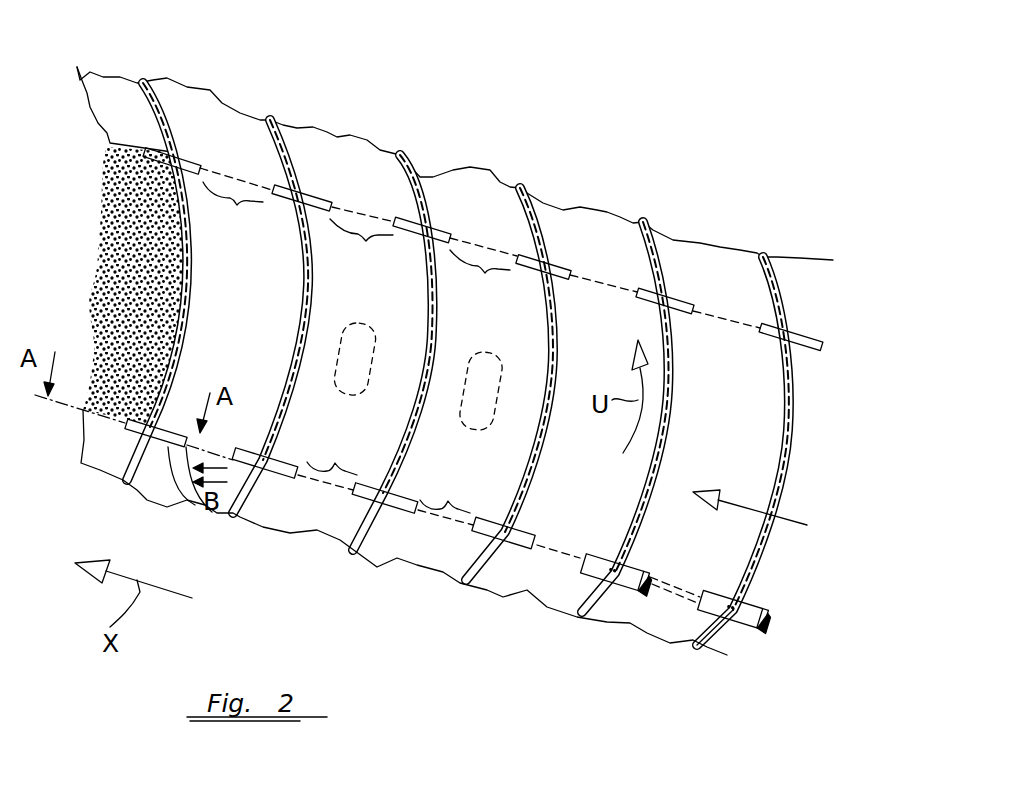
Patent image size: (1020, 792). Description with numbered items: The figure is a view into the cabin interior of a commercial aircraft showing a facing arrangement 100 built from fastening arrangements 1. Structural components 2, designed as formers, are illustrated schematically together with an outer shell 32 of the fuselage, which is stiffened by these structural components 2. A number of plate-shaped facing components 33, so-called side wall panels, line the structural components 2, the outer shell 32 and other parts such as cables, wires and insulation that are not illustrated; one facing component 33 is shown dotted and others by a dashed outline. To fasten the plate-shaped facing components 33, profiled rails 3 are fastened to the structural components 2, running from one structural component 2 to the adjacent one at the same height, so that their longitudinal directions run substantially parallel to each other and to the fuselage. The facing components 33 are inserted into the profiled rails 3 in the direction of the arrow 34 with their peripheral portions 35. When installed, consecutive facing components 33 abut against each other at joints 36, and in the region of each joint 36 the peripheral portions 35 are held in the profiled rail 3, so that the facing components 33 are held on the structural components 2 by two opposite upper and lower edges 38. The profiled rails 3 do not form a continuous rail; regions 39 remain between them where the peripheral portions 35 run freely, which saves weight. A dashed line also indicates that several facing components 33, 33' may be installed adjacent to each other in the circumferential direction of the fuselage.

The fastening arrangement 1 is at (183, 158).
The structural component 2 is at (182, 135).
The profiled rail 3 is at (215, 162).
The outer shell 32 is at (417, 547).
The plate-shaped facing component 33 is at (443, 347).
The plate-shaped facing component 33' is at (710, 648).
The arrow 34 is at (740, 503).
The peripheral portion 35 is at (132, 146).
The joint 36 is at (157, 462).
The upper and lower edges 38 is at (113, 130).
The region 39 is at (397, 386).
The facing arrangement 100 is at (512, 220).